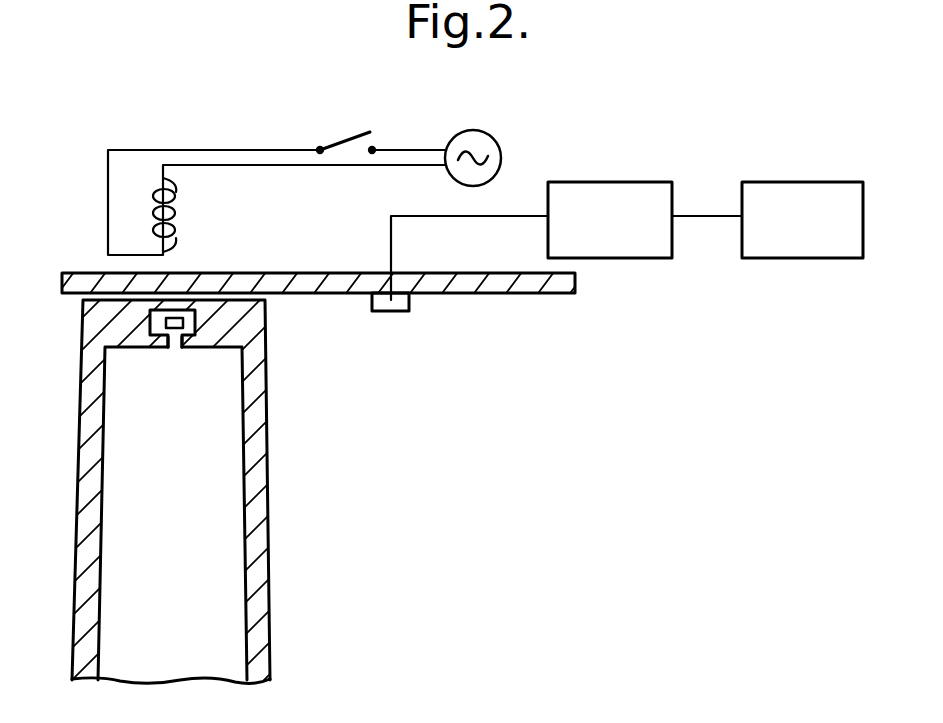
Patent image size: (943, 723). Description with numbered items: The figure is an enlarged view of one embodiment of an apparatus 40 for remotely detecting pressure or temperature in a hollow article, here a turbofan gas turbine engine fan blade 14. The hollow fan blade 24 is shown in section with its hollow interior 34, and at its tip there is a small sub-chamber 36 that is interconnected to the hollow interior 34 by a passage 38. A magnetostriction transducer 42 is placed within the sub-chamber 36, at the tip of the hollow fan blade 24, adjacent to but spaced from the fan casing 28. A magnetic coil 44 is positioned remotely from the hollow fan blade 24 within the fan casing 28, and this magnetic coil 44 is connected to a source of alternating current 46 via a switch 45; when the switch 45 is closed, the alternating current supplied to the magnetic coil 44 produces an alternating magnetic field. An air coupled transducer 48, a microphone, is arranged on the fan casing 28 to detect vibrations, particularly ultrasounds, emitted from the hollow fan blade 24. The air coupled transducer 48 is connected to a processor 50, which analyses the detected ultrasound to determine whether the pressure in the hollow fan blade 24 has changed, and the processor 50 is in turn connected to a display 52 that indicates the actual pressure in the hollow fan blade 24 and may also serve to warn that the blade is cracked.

The fan blade 14 is at (142, 1).
The hollow fan blade 24 is at (248, 441).
The fan casing 28 is at (320, 277).
The hollow interior 34 is at (213, 556).
The sub-chamber 36 is at (195, 322).
The passage 38 is at (172, 350).
The apparatus 40 is at (414, 142).
The magnetostriction transducer 42 is at (150, 312).
The magnetic coil 44 is at (178, 222).
The switch 45 is at (343, 137).
The source of alternating current 46 is at (488, 145).
The air coupled transducer 48 is at (393, 300).
The processor 50 is at (616, 193).
The display 52 is at (796, 193).